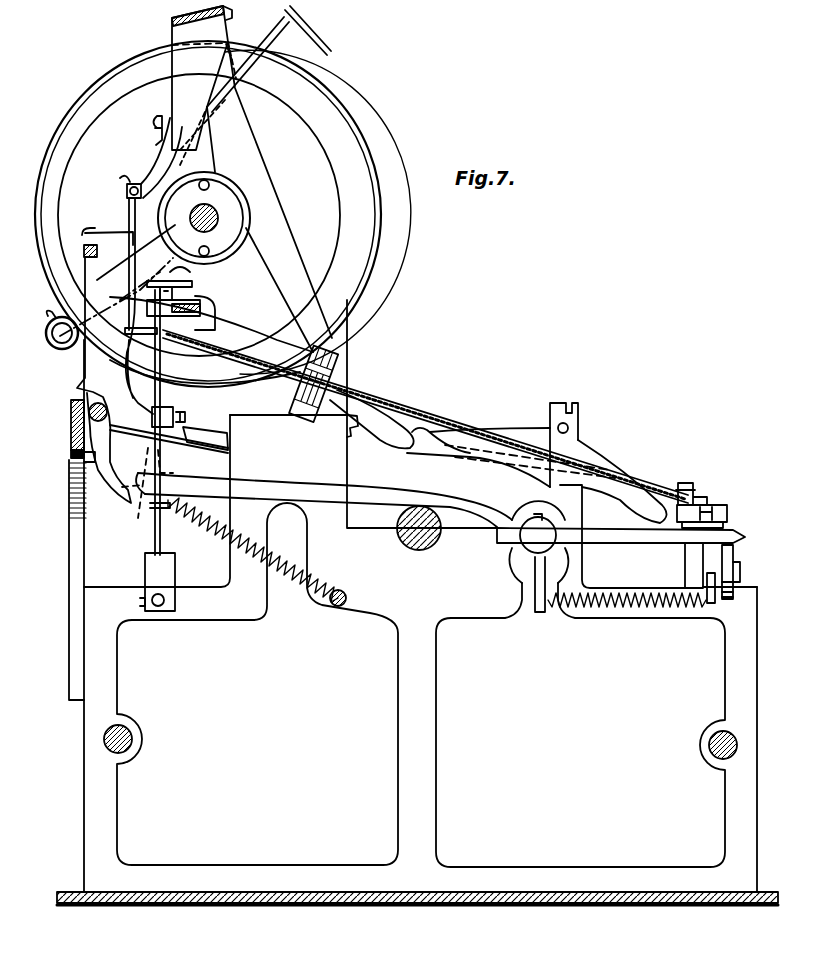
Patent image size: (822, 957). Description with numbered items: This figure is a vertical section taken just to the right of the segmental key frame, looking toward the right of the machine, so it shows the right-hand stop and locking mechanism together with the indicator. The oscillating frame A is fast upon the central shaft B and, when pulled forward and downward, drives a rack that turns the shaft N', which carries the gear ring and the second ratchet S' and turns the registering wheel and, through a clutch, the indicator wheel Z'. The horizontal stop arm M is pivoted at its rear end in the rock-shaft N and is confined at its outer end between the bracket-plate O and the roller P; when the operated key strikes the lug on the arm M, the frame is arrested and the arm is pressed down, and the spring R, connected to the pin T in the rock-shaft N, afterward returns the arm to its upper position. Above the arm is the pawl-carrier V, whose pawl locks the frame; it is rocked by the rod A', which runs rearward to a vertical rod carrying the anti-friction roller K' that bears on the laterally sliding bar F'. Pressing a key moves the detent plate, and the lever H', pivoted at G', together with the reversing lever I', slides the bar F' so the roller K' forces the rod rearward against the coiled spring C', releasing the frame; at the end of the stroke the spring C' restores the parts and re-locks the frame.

The indicator wheel Z' is at (223, 209).
The shaft N' is at (204, 218).
The laterally sliding bar F' is at (195, 298).
The anti-friction roller K' is at (127, 338).
The second lever I' is at (399, 400).
The rod A' is at (468, 403).
The pivot G' is at (575, 431).
The lever H' is at (631, 514).
The pawl-carrier V is at (728, 508).
The bracket-plate O is at (726, 524).
The roller P is at (733, 548).
The stop arm M is at (620, 537).
The oscillating frame A is at (311, 512).
The central shaft B is at (165, 545).
The coiled spring C' is at (253, 550).
The rock-shaft N is at (533, 538).
The pin T is at (535, 577).
The spring R is at (645, 607).
The second ratchet S' is at (726, 594).